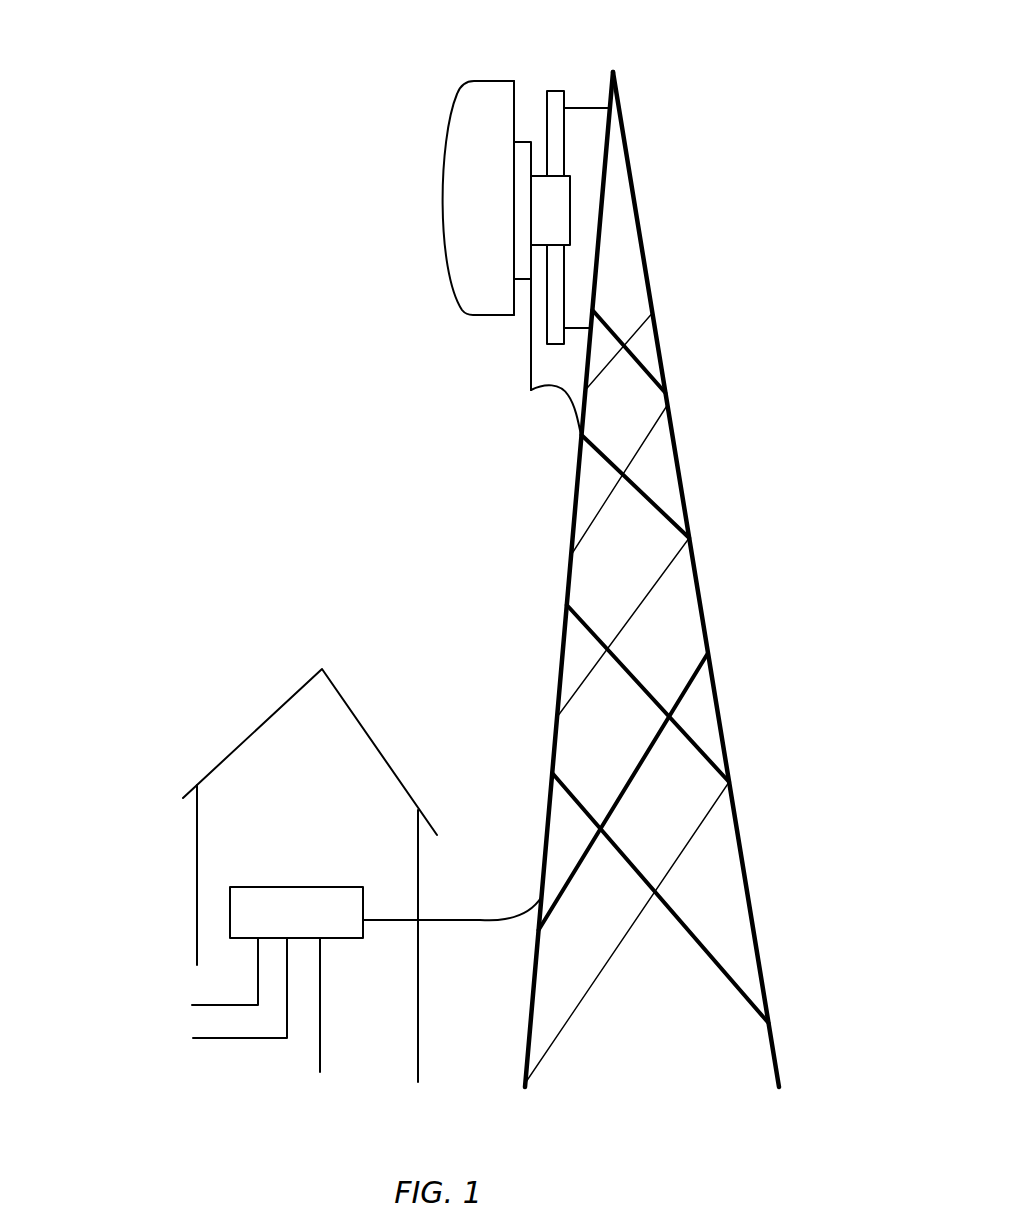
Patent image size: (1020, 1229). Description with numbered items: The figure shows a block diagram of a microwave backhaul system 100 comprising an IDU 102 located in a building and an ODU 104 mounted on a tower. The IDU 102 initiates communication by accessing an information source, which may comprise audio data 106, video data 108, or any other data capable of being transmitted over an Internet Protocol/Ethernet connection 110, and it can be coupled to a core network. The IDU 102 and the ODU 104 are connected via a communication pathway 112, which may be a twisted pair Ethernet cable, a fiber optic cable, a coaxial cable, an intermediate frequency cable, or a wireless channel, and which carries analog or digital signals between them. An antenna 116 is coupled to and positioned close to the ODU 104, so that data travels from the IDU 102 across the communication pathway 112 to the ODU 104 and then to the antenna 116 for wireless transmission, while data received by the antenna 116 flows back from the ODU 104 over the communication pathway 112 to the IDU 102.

The microwave backhaul system 100 is at (172, 177).
The IDU 102 is at (252, 887).
The ODU 104 is at (525, 106).
The audio data 106 is at (225, 972).
The video data 108 is at (240, 988).
The Internet Protocol (IP)/Ethernet connection 110 is at (320, 1042).
The communication pathway 112 is at (475, 927).
The antenna 116 is at (445, 123).